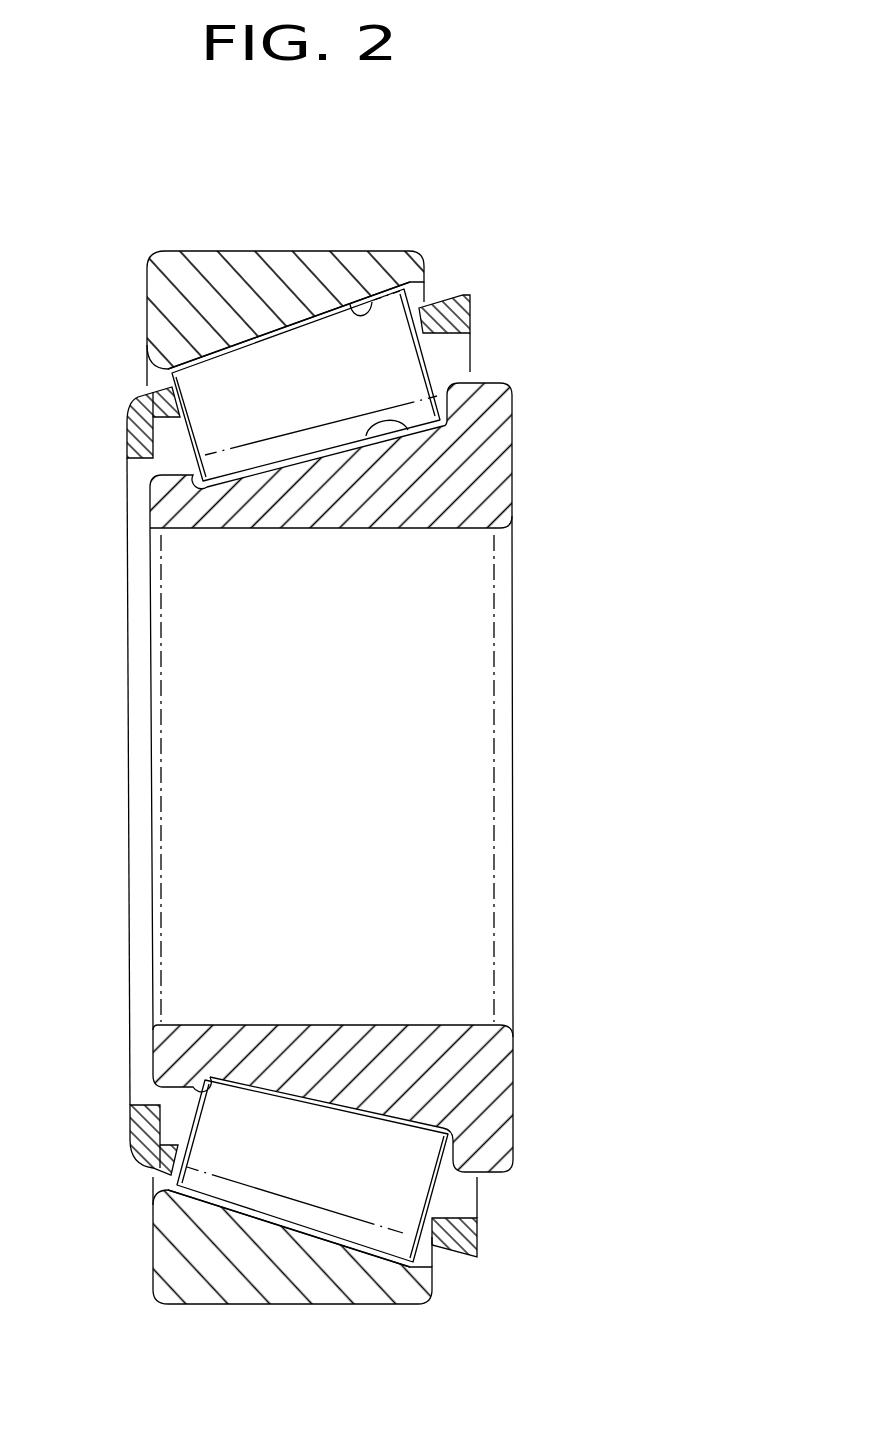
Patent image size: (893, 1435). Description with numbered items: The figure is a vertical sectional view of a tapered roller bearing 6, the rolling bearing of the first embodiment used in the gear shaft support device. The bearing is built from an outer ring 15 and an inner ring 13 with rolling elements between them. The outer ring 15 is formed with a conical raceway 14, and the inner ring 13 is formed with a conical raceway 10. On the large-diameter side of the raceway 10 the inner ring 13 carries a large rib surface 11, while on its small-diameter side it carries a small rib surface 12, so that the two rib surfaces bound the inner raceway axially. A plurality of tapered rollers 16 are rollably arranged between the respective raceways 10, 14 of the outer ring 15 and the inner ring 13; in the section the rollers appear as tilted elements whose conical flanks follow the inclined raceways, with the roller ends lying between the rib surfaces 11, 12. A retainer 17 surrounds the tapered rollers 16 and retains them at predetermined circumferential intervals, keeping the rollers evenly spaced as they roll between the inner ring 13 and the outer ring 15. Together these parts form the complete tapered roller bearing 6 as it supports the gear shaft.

The tapered roller bearing 6 is at (317, 733).
The outer ring 15 is at (242, 733).
The conical raceway 14 is at (375, 712).
The tapered rollers 16 is at (212, 373).
The retainer 17 is at (138, 416).
The small rib surface 12 is at (183, 463).
The large rib surface 11 is at (432, 388).
The conical raceway 10 is at (437, 417).
The inner ring 13 is at (317, 777).